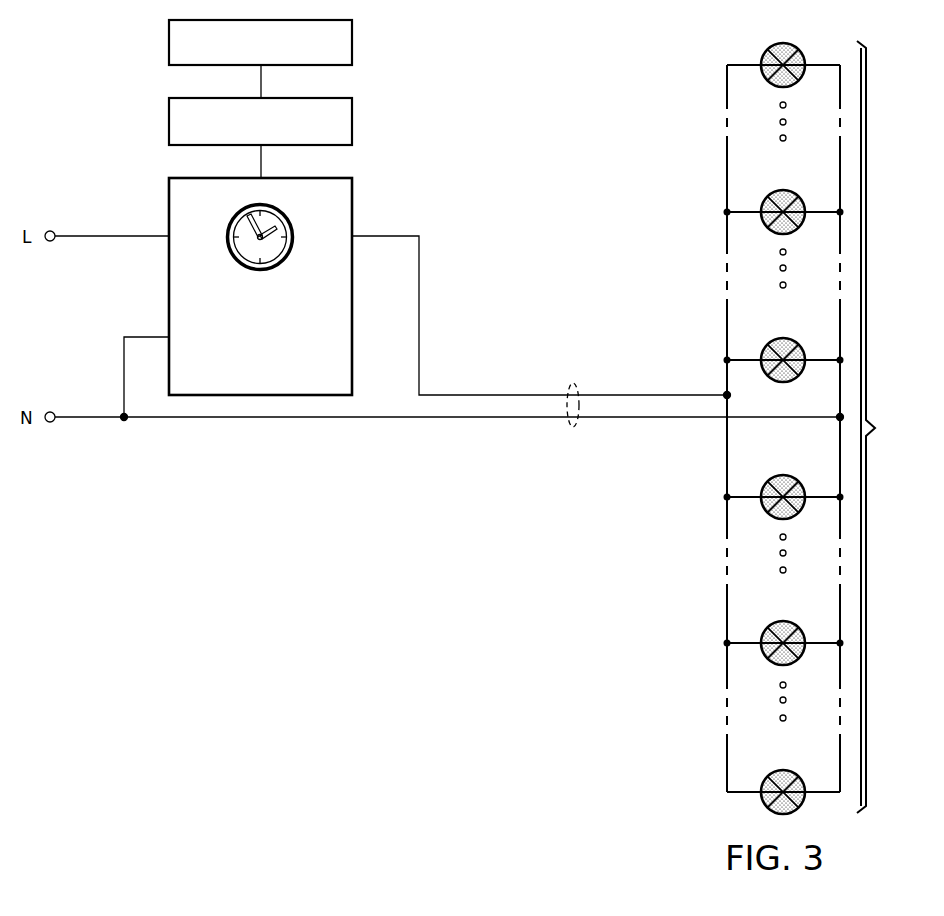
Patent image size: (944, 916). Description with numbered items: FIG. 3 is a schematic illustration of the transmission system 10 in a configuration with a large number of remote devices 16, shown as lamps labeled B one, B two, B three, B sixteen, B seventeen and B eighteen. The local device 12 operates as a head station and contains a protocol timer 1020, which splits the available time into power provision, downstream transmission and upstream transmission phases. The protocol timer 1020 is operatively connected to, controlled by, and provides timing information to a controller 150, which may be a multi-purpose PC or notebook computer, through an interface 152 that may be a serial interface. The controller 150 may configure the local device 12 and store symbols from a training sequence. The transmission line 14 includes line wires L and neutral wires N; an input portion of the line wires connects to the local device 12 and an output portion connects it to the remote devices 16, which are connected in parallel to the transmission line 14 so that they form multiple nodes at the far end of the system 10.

The transmission system 10 is at (300, 615).
The local device 12 is at (275, 364).
The transmission line 14 is at (573, 383).
The remote devices 16 is at (815, 413).
The controller 150 is at (169, 42).
The interface 152 is at (169, 120).
The protocol timer 1020 is at (245, 269).